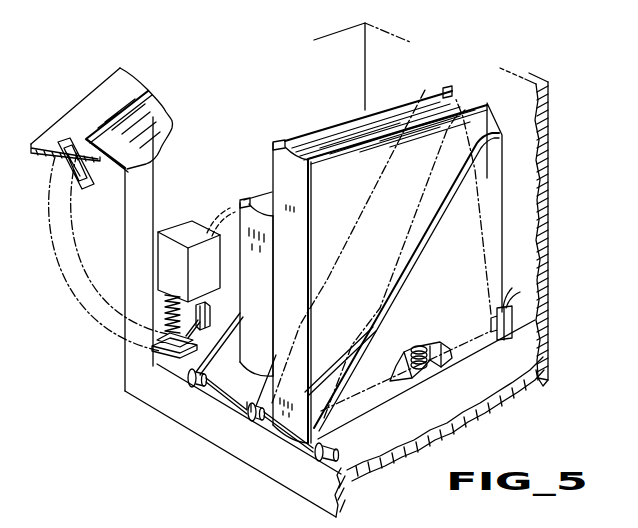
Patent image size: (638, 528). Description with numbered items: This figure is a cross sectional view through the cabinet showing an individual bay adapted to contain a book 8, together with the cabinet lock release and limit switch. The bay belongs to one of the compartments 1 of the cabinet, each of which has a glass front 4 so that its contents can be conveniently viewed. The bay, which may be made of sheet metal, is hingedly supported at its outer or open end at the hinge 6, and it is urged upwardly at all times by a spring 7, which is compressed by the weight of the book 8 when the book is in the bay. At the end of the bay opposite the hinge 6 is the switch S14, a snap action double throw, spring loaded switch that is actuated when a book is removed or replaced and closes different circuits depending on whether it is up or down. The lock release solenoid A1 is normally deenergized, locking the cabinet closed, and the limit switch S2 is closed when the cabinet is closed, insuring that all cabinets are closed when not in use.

The compartment 1 is at (578, 158).
The glass front 4 is at (158, 113).
The lock release solenoid A1 is at (181, 224).
The limit switch S2 is at (204, 316).
The book 8 is at (318, 125).
The hinge 6 is at (287, 437).
The spring 7 is at (418, 372).
The switch S14 is at (515, 318).